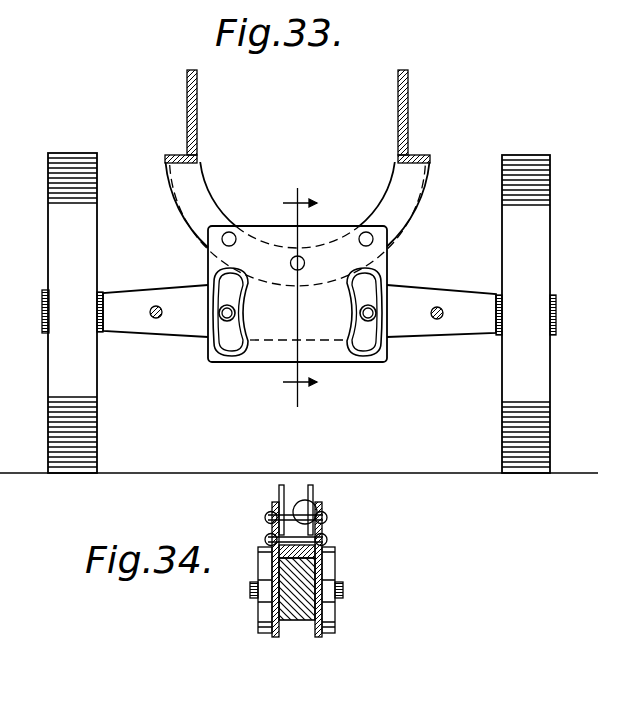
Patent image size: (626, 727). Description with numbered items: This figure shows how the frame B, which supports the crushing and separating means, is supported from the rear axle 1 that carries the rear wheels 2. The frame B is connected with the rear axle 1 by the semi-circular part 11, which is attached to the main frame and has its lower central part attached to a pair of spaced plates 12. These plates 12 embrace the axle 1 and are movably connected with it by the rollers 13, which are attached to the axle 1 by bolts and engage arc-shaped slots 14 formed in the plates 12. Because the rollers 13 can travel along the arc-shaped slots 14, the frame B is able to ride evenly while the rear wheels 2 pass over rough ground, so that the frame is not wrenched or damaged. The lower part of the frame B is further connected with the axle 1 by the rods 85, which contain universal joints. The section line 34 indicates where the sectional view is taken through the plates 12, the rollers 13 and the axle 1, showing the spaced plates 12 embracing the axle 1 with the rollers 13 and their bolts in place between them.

In FIG. 33, the rear axle 1 is at (177, 340).
In FIG. 34, the rear axle 1 is at (300, 617).
In FIG. 33, the rear wheels 2 is at (83, 362).
In FIG. 33, the semi-circular part 11 is at (405, 190).
In FIG. 34, the semi-circular part 11 is at (284, 495).
In FIG. 33, the spaced plates 12 is at (330, 353).
In FIG. 34, the spaced plates 12 is at (272, 505).
In FIG. 33, the rollers 13 is at (236, 313).
In FIG. 34, the rollers 13 is at (338, 578).
In FIG. 33, the arc-shaped slots 14 is at (235, 355).
In FIG. 33, the rods 85 is at (158, 306).
In FIG. 33, the frame B is at (409, 100).
In FIG. 33, the section line 34— 34 is at (301, 298).